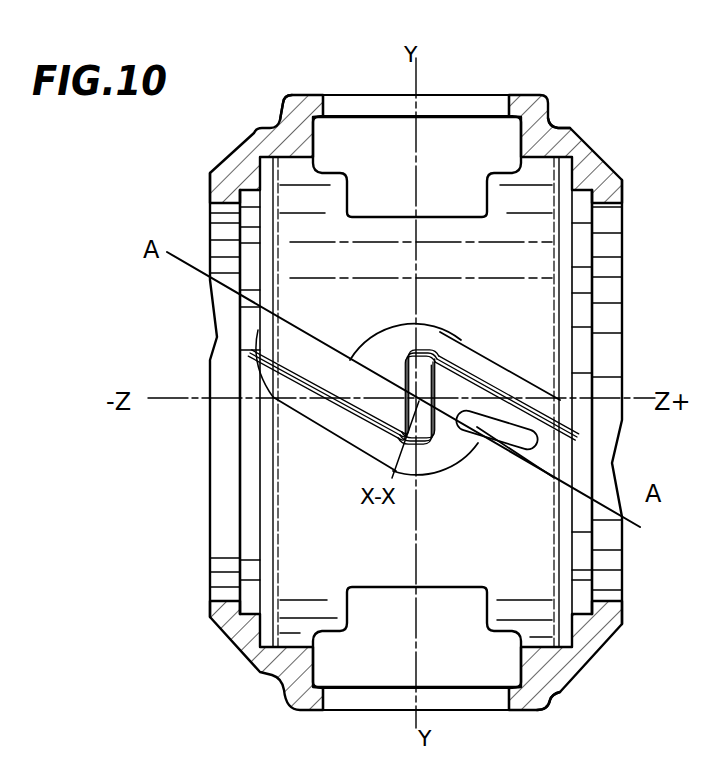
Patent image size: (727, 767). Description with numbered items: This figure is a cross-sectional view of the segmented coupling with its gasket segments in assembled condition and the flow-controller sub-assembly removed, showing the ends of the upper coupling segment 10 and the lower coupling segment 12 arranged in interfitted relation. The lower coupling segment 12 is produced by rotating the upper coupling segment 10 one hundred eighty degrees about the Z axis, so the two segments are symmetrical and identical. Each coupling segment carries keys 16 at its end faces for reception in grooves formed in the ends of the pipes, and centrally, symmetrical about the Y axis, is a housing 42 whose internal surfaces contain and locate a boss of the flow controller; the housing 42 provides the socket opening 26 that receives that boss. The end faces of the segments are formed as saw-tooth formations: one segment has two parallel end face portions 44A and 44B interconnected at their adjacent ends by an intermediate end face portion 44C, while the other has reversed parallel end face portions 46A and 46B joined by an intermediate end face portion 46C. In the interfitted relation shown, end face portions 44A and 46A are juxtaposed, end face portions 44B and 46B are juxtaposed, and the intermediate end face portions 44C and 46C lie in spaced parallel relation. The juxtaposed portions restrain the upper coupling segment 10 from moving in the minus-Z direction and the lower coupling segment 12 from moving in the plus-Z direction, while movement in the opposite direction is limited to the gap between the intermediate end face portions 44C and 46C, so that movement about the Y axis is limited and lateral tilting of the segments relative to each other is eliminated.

The upper coupling segment 10 is at (572, 132).
The lower coupling segment 12 is at (583, 669).
The keys 16 is at (213, 222).
The socket openings 26 is at (501, 94).
The housing 42 is at (281, 104).
The end face portion 44A is at (309, 343).
The end face portion 44B is at (458, 367).
The intermediate end face portion 44C is at (386, 368).
The end face portion 46A is at (352, 416).
The end face portion 46B is at (531, 446).
The intermediate end face portion 46C is at (458, 412).